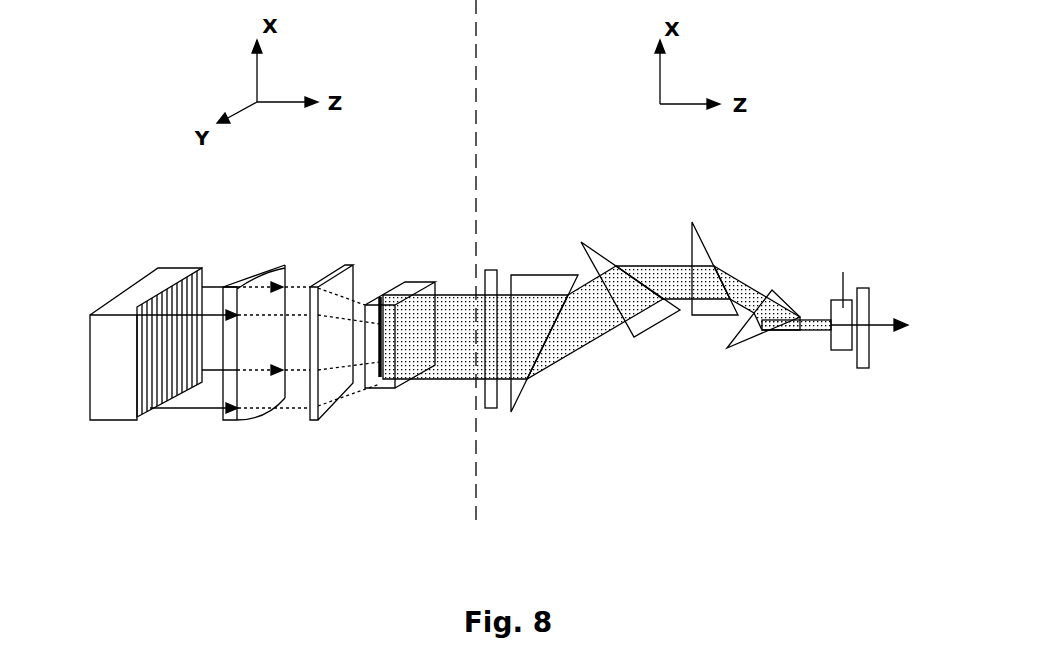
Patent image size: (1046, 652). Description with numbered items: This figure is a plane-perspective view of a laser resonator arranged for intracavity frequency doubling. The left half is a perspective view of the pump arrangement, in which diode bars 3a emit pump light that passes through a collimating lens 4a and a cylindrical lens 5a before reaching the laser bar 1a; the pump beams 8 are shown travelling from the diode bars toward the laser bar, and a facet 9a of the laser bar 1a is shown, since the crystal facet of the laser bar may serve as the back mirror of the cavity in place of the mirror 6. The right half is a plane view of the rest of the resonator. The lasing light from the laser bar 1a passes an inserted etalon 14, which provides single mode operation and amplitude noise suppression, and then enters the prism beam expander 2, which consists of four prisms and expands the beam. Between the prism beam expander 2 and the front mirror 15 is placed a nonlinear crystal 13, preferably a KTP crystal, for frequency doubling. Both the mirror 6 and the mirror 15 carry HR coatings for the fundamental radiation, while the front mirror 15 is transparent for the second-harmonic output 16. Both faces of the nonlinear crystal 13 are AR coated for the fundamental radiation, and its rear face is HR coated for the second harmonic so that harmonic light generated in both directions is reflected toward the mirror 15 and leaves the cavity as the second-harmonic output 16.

The laser bar 1a is at (430, 282).
The prism beam expander 2 is at (517, 194).
The diode bars 3a is at (120, 400).
The collimating lens 4a is at (168, 313).
The cylindrical lens 5a is at (262, 415).
The mirror 6 is at (337, 400).
The pump beams 8 is at (200, 398).
The reflective coating on crystal 9a is at (380, 320).
The nonlinear crystal 13 is at (833, 350).
The etalon 14 is at (492, 408).
The mirror 15 is at (863, 368).
The second-harmonic output 16 is at (883, 325).